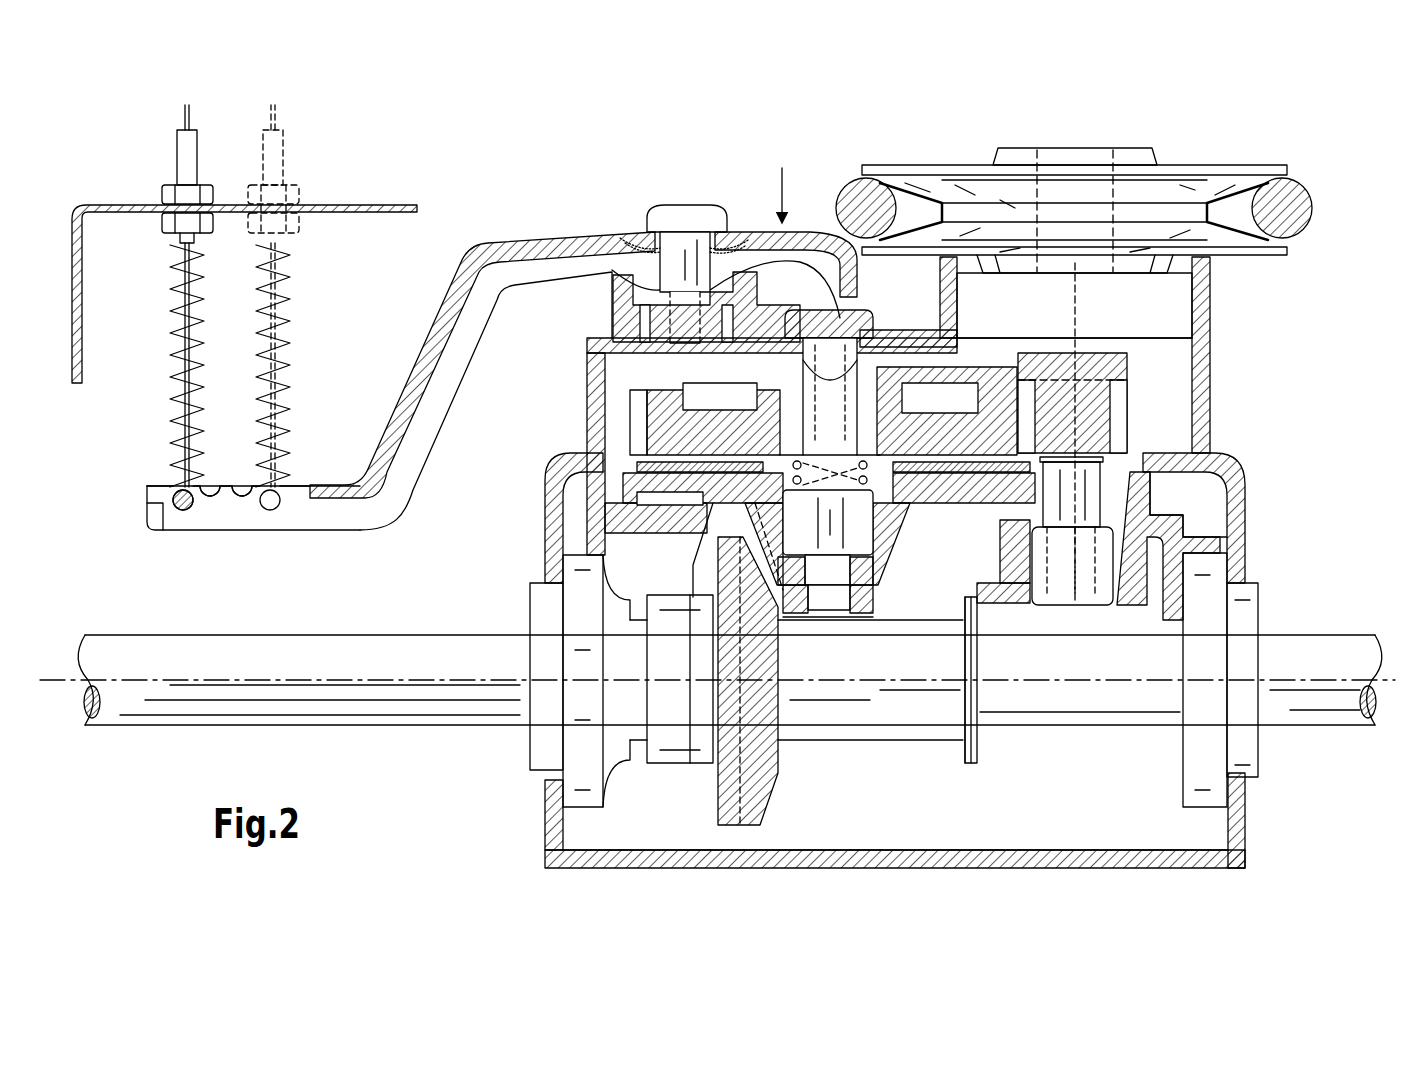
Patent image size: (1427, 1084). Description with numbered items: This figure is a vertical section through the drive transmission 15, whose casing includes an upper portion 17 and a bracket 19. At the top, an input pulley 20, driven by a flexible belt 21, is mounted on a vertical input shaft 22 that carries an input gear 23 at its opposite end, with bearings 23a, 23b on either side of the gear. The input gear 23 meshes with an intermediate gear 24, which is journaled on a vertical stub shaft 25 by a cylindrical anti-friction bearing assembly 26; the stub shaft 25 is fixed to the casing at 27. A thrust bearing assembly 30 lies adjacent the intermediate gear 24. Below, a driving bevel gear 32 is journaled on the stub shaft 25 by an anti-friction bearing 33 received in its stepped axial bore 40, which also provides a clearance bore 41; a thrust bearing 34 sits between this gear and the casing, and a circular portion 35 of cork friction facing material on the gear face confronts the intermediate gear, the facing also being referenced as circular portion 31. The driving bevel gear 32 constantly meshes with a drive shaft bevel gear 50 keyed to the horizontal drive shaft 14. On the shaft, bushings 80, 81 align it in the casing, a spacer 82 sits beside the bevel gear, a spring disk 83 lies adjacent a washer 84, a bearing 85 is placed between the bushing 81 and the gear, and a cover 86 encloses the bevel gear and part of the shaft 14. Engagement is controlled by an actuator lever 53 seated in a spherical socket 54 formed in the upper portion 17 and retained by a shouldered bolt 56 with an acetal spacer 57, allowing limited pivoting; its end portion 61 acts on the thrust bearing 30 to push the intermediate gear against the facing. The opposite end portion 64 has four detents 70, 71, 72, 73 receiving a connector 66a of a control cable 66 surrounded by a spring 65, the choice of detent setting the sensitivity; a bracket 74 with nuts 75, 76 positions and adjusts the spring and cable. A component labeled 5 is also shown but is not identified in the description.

The clutch housing 5 is at (600, 456).
The drive shaft 14 is at (140, 725).
The drive transmission 15 is at (1230, 475).
The upper portion 17 is at (1205, 298).
The bracket 19 is at (1243, 500).
The input pulley 20 is at (1178, 165).
The flexible belt 21 is at (1312, 190).
The vertical input shaft 22 is at (1095, 500).
The input gear 23 is at (1120, 410).
The bearing 23a is at (1140, 342).
The bearing 23b is at (1080, 605).
The intermediate gear 24 is at (635, 418).
The vertical stub shaft 25 is at (860, 368).
The cylindrical anti-friction bearing assembly 26 is at (790, 395).
The connection 27 is at (875, 603).
The thrust bearing assembly 30 is at (590, 352).
The circular portion of friction facing material 31 is at (985, 385).
The driving bevel gear 32 is at (725, 515).
The anti-friction bearing 33 is at (870, 515).
The thrust bearing 34 is at (610, 500).
The circular portion of friction facing material 35 is at (635, 467).
The axial bore 40 is at (870, 500).
The clearance bore 41 is at (875, 568).
The drive shaft bevel gear 50 is at (770, 775).
The actuator lever 53 is at (510, 240).
The spherical socket 54 is at (615, 298).
The shouldered bolt 56 is at (690, 205).
The acetal spacer 57 is at (638, 234).
The end portion 61 is at (788, 180).
The end portion 64 is at (140, 540).
The spring 65 is at (172, 352).
The control cable 66 is at (197, 160).
The connector 66a is at (185, 515).
The detent 70 is at (175, 490).
The detent 71 is at (195, 490).
The detent 72 is at (242, 500).
The detent 73 is at (283, 492).
The bracket 74 is at (128, 205).
The nut 75 is at (165, 190).
The nut 76 is at (165, 228).
The bushing 80 is at (1245, 610).
The bushing 81 is at (548, 750).
The spacer 82 is at (895, 740).
The spring disk 83 is at (967, 765).
The washer 84 is at (977, 750).
The bearing 85 is at (680, 763).
The cover 86 is at (905, 862).